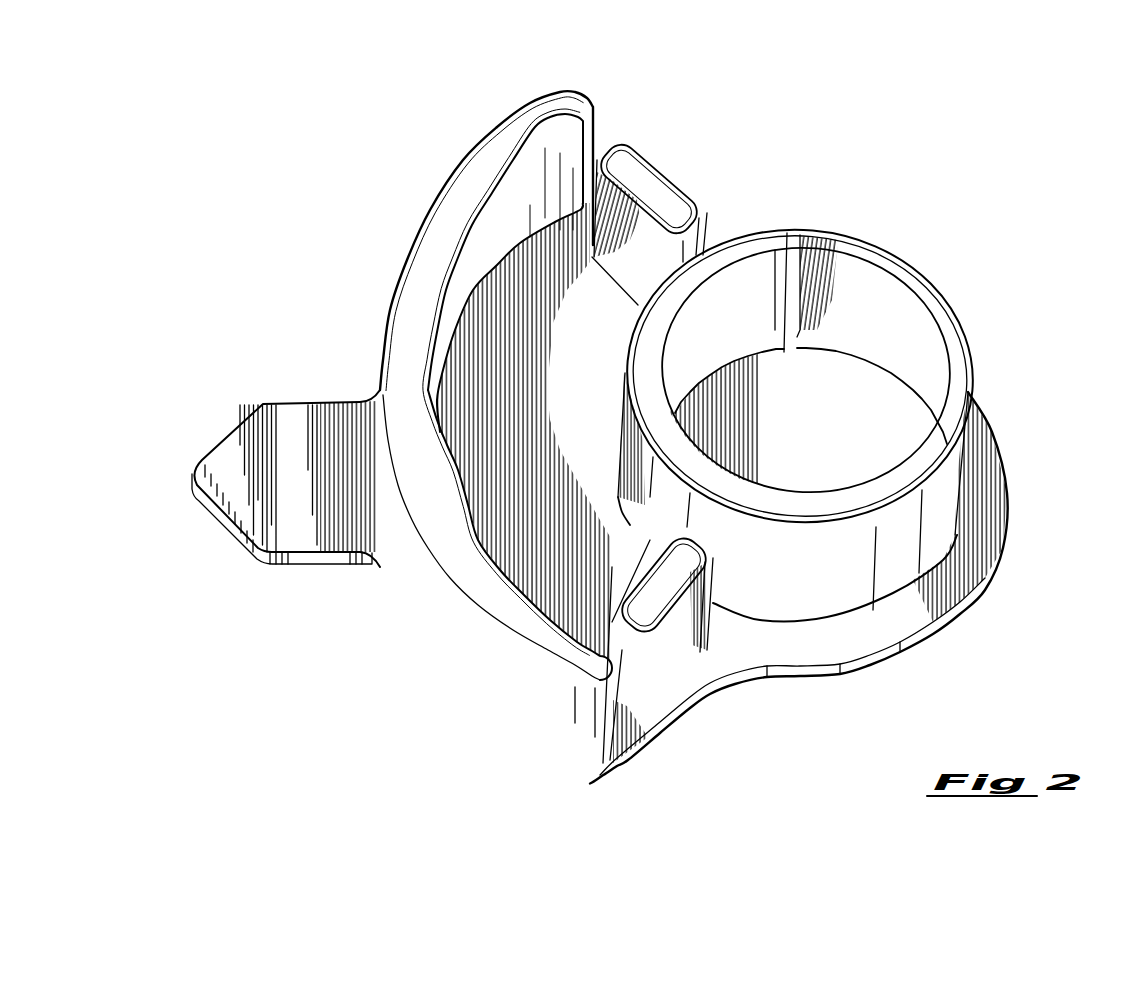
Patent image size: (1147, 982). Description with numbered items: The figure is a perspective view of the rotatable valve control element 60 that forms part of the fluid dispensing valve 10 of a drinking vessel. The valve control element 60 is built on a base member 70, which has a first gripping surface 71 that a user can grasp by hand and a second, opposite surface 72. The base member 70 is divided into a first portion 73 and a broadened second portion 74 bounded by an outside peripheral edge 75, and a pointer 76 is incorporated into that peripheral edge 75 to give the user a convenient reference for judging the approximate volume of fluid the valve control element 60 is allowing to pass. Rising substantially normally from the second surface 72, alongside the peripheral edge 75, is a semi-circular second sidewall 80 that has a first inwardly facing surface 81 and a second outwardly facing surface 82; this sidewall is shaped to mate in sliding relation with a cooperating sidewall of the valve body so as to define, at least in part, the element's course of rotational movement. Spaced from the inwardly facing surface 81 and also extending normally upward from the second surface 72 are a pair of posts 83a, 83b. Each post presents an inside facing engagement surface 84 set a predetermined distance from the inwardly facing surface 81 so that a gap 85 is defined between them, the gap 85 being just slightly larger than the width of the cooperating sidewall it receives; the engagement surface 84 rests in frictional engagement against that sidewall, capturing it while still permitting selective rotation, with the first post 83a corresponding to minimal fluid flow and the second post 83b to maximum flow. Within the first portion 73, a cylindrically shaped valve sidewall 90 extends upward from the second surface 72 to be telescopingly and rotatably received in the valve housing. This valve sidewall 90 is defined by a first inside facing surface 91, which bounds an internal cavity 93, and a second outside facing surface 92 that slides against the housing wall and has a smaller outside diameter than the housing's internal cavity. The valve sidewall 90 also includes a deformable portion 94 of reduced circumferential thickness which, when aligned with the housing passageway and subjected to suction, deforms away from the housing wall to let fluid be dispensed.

The fluid dispensing valve 10 is at (1053, 165).
The valve control element 60 is at (913, 152).
The base member 70 is at (973, 603).
The first gripping surface 71 is at (923, 640).
The second surface 72 is at (985, 505).
The first portion 73 is at (785, 638).
The second portion 74 is at (607, 339).
The outside peripheral edge 75 is at (490, 745).
The pointer 76 is at (287, 430).
The semi-circular second sidewall 80 is at (437, 673).
The first inwardly facing surface 81 is at (477, 242).
The second outwardly facing surface 82 is at (425, 603).
The first post 83a is at (637, 247).
The second post 83b is at (677, 633).
The inside facing engagement surface 84 is at (617, 145).
The gap 85 is at (601, 148).
The cylindrically shaped valve sidewall 90 is at (1023, 300).
The first inside facing surface 91 is at (740, 336).
The second outside facing surface 92 is at (637, 485).
The internal cavity 93 is at (843, 377).
The deformable portion 94 is at (910, 336).